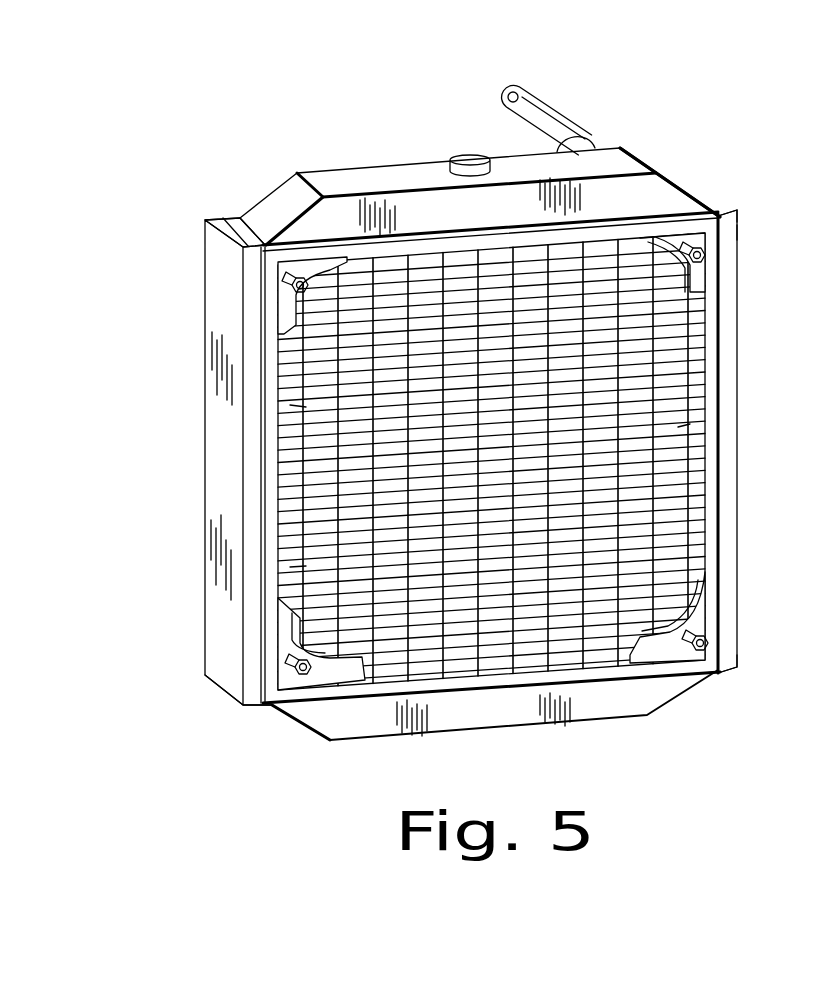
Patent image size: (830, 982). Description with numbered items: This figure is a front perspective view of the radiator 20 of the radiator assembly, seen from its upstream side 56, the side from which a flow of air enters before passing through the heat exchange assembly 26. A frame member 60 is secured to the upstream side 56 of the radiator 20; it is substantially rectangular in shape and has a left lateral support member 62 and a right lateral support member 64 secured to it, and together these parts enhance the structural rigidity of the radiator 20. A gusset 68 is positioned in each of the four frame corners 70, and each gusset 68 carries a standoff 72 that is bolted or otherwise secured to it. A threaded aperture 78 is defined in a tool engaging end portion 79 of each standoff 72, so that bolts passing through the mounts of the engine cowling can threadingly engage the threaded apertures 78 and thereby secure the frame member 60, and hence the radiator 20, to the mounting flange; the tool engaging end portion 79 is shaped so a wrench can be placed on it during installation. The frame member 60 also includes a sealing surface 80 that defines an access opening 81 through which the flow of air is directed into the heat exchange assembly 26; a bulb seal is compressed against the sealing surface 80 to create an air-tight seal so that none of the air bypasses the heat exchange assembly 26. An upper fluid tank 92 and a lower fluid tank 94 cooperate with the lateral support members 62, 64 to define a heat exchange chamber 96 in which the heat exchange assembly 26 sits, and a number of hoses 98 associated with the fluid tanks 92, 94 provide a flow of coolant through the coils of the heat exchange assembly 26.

The radiator 20 is at (220, 117).
The heat exchange assembly 26 is at (300, 375).
The upstream side 56 is at (292, 406).
The frame member 60 is at (756, 441).
The left lateral support member 62 is at (739, 233).
The right lateral support member 64 is at (222, 453).
The gusset 68 is at (310, 268).
The frame corner 70 is at (722, 227).
The standoff 72 is at (695, 250).
The threaded aperture 78 is at (337, 258).
The tool engaging end portion 79 is at (708, 672).
The sealing surface 80 is at (430, 245).
The access opening 81 is at (690, 424).
The upper fluid tank 92 is at (612, 155).
The lower fluid tank 94 is at (510, 705).
The heat exchange chamber 96 is at (292, 567).
The hose 98 is at (545, 110).